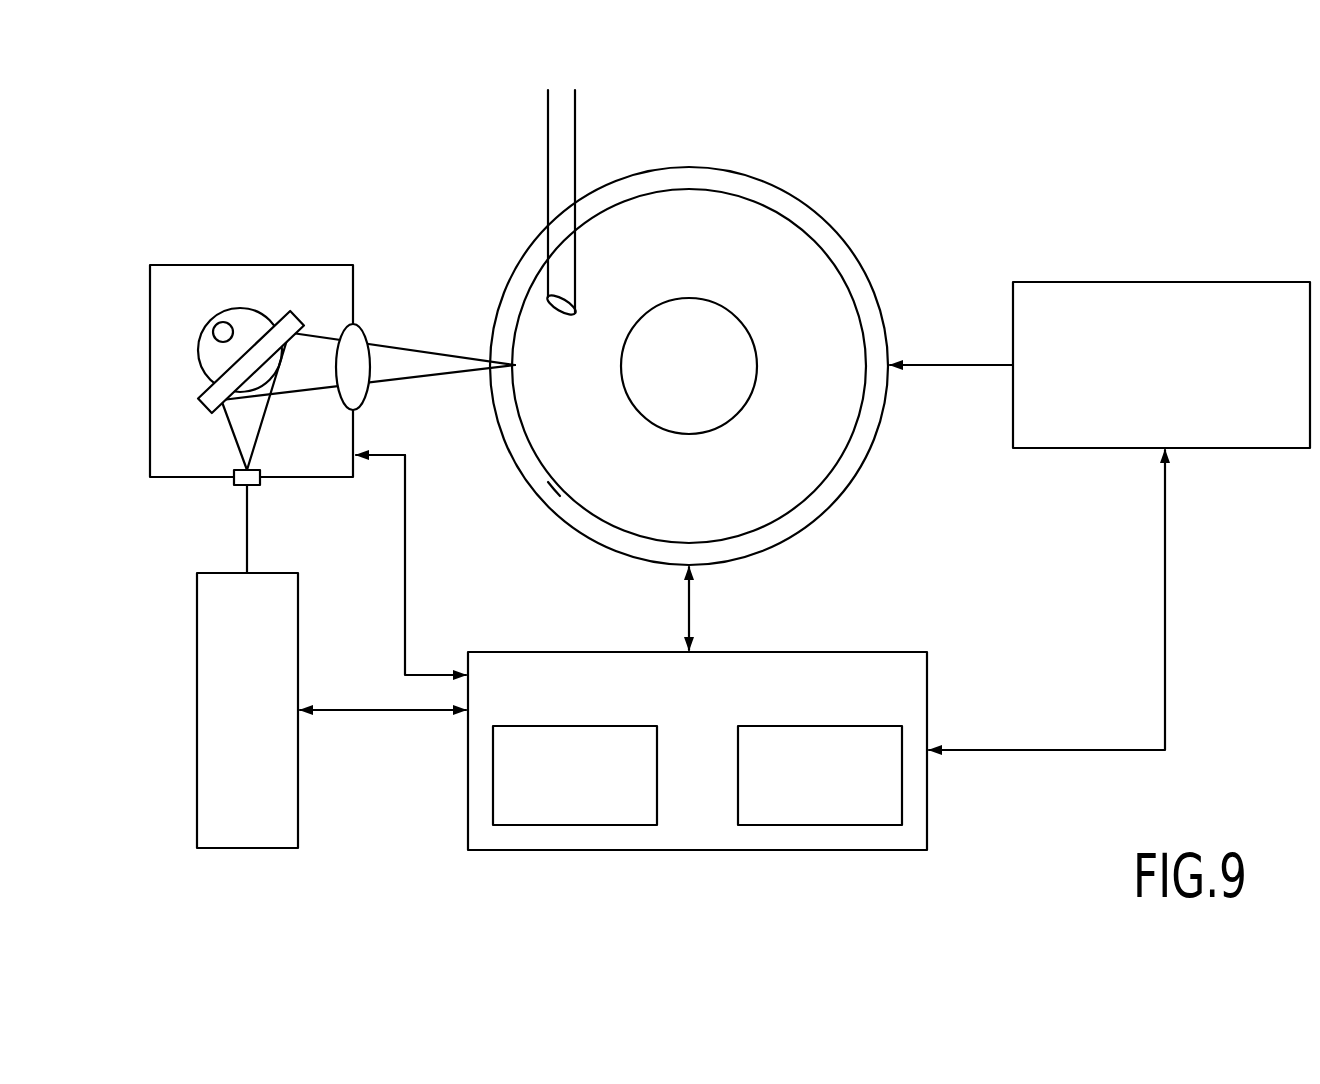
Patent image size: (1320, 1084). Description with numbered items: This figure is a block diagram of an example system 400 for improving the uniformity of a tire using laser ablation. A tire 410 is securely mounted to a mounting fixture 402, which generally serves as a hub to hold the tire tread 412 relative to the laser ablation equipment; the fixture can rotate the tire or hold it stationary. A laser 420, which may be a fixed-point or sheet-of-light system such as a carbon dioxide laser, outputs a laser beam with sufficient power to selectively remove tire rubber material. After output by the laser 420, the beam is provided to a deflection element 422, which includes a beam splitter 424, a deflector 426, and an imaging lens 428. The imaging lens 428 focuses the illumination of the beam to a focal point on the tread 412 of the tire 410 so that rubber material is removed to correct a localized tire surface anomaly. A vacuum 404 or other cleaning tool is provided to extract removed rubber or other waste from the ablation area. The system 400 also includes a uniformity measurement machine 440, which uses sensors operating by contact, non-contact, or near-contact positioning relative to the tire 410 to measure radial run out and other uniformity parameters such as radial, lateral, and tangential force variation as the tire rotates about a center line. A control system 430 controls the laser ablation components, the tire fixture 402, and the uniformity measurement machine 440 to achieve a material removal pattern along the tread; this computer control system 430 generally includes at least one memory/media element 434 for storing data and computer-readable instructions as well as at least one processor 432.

The system 400 is at (1050, 150).
The mounting fixture 402 is at (820, 218).
The vacuum 404 is at (575, 117).
The tire 410 is at (818, 285).
The tire tread 412 is at (558, 482).
The laser 420 is at (197, 652).
The deflection element 422 is at (300, 265).
The beam splitter 424 is at (237, 483).
The deflector 426 is at (279, 318).
The imaging lens 428 is at (357, 333).
The control system 430 is at (865, 850).
The processor 432 is at (493, 806).
The memory/media element 434 is at (902, 803).
The uniformity measurement machine 440 is at (1235, 282).